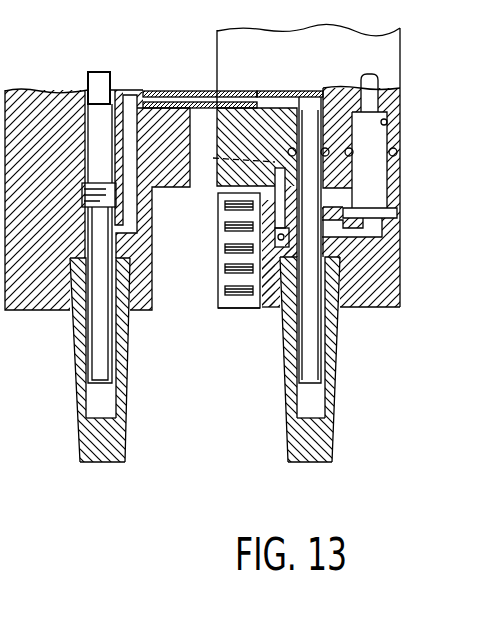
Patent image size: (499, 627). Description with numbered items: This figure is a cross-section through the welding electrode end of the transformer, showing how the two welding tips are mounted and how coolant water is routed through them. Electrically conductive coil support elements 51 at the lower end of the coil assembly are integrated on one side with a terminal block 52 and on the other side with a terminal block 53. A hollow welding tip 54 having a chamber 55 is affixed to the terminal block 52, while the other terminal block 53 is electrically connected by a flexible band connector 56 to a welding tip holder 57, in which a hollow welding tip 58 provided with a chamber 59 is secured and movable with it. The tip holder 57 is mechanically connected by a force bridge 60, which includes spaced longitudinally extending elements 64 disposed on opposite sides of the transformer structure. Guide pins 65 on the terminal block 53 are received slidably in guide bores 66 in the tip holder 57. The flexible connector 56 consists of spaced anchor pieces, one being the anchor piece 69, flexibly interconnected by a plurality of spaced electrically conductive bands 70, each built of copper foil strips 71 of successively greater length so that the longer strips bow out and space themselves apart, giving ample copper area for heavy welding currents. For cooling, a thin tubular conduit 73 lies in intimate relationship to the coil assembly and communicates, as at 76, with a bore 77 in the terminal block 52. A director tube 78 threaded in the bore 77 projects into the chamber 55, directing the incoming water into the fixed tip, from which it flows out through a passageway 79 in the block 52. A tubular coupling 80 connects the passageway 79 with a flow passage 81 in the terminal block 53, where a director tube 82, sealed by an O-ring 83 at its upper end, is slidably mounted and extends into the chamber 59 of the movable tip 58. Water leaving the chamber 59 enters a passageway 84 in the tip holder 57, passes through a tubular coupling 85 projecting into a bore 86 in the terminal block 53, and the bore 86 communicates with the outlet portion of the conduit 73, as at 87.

The coil support elements 51 is at (10, 14).
The terminal block 52 is at (32, 90).
The terminal block 53 is at (338, 87).
The hollow welding tip 54 is at (82, 437).
The chamber 55 is at (90, 400).
The flexible band connector 56 is at (228, 306).
The welding tip holder 57 is at (387, 307).
The hollow welding tip 58 is at (336, 441).
The chamber 59 is at (300, 405).
The force bridge 60 is at (272, 206).
The longitudinally extending elements 64 is at (323, 38).
The guide pins 65 is at (258, 192).
The guide bores 66 is at (278, 237).
The anchor piece 69 is at (226, 302).
The electrically conductive bands 70 is at (230, 266).
The copper foil strips 71 is at (232, 290).
The tubular conduit 73 is at (384, 58).
The communication point of conduit with bore 76 is at (110, 88).
The bore 77 is at (95, 145).
The director tube 78 is at (93, 323).
The passageway 79 is at (134, 158).
The tubular coupling 80 is at (199, 93).
The flow passage 81 is at (294, 93).
The director tube 82 is at (317, 365).
The O-ring 83 is at (289, 152).
The passageway 84 is at (381, 232).
The tubular coupling 85 is at (382, 202).
The bore 86 is at (387, 122).
The communication point of bore with conduit 87 is at (380, 91).